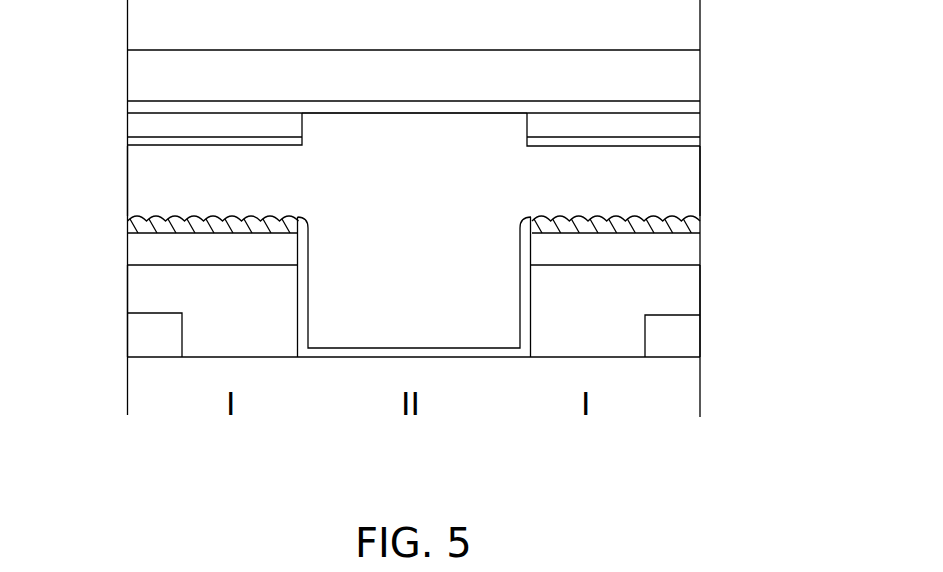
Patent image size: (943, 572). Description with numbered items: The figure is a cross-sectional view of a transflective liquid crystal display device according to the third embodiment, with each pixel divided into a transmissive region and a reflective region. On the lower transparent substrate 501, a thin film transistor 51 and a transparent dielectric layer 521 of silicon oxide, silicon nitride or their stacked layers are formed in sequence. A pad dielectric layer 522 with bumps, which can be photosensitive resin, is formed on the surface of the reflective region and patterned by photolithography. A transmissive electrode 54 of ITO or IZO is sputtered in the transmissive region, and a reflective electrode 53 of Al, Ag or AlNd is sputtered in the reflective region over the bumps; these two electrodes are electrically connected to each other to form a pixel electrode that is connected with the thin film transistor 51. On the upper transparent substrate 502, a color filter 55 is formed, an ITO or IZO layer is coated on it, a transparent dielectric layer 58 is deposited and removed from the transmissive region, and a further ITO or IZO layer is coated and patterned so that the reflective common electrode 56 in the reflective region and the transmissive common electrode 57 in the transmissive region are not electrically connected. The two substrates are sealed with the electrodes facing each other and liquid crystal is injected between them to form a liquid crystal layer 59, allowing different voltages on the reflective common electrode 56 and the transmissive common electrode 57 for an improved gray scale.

The transparent substrate 502 is at (414, 29).
The color filter 55 is at (683, 74).
The transparent dielectric layer 58 is at (678, 127).
The reflective common electrode 56 is at (168, 141).
The transmissive common electrode 57 is at (398, 108).
The liquid crystal layer 59 is at (678, 170).
The reflective electrode 53 is at (695, 228).
The transmissive electrode 54 is at (521, 262).
The pad dielectric layer 522 is at (683, 250).
The transparent dielectric layer 521 is at (683, 290).
The thin film transistor 51 is at (683, 340).
The transparent substrate 501 is at (415, 380).